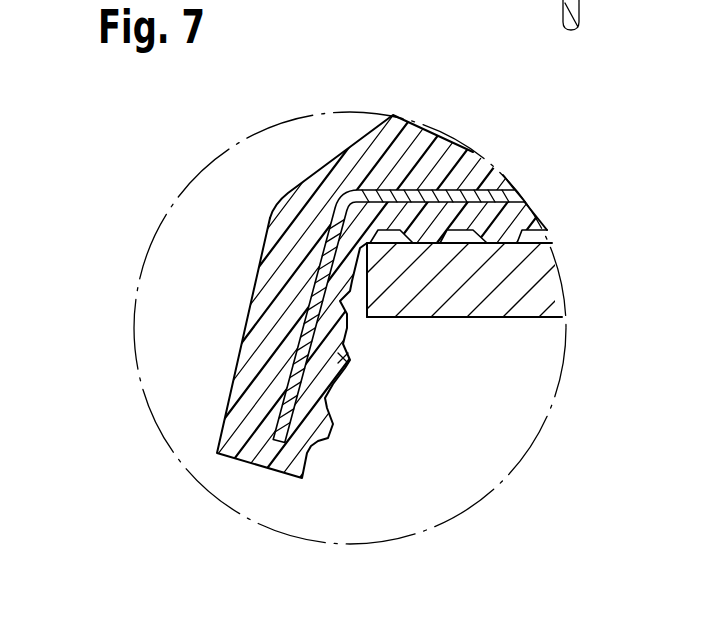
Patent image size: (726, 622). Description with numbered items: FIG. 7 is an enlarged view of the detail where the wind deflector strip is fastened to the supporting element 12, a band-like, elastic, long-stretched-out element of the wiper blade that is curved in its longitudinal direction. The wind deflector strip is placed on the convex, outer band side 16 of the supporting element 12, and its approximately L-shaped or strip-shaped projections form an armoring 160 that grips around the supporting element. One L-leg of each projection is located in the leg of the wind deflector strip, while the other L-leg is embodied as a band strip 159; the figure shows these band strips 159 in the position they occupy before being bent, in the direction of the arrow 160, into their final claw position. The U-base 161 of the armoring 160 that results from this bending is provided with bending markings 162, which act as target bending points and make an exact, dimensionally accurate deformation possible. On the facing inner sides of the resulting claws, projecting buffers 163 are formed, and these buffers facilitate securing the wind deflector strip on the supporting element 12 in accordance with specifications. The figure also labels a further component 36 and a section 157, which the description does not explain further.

The supporting element 12 is at (511, 330).
The outer band side 16 is at (496, 182).
The housing block 36 is at (525, 282).
The angled body section 157 is at (337, 243).
The band strip 159 is at (273, 370).
The armoring 160 is at (344, 0).
The U-base 161 is at (391, 174).
The bending markings 162 is at (313, 302).
The projecting buffers 163 is at (490, 240).